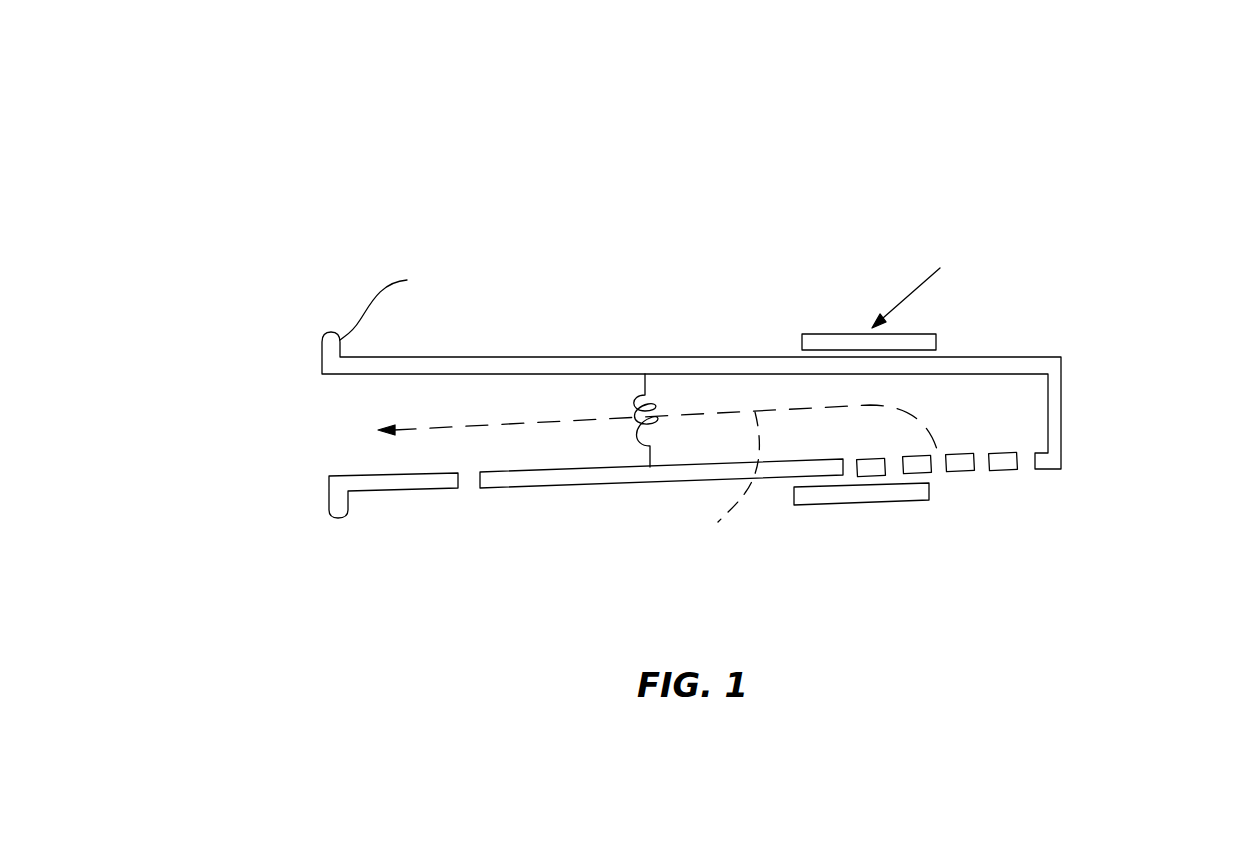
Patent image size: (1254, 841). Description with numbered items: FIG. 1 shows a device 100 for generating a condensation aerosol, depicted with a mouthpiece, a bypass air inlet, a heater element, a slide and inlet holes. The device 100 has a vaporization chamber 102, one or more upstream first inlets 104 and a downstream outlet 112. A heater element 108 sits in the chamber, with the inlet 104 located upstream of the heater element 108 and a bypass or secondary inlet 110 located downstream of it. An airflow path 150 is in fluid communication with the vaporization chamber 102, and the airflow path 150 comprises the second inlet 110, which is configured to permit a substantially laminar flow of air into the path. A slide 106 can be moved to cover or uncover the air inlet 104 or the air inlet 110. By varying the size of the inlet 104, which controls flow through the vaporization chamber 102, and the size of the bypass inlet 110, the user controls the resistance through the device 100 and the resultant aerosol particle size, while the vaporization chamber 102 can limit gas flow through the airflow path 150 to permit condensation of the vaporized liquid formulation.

The device 100 is at (1097, 181).
The vaporization chamber 102 is at (712, 385).
The inlet 104 is at (986, 497).
The slide 106 is at (852, 505).
The heater element 108 is at (637, 430).
The bypass or secondary inlet 110 is at (457, 521).
The outlet 112 is at (285, 431).
The airflow path 150 is at (728, 484).